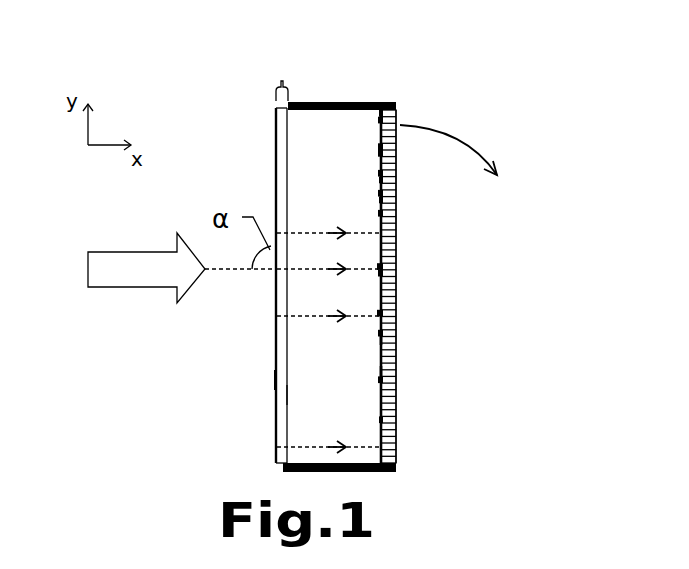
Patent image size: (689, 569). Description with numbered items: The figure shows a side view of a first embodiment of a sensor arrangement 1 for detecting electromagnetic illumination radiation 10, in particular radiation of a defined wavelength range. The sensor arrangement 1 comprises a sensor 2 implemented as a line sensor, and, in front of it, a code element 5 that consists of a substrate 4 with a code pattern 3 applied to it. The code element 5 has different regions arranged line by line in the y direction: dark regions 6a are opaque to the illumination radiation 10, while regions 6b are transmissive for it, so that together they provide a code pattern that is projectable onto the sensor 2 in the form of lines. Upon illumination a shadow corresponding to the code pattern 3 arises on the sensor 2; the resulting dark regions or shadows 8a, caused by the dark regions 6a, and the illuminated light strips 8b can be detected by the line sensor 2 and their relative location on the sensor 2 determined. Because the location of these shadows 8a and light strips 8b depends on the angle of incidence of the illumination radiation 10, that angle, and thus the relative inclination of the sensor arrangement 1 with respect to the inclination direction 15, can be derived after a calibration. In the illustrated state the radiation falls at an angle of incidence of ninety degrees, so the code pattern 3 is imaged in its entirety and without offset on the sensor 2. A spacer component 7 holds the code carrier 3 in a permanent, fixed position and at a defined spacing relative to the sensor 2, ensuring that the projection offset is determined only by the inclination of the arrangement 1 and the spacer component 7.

The sensor arrangement 1 is at (373, 253).
The sensor 2 is at (418, 286).
The code pattern 3 is at (272, 140).
The substrate 4 is at (247, 285).
The code element 5 is at (282, 74).
The dark regions 6a is at (242, 370).
The transmissive regions 6b is at (247, 405).
The spacer component 7 is at (371, 279).
The shadows 8a is at (427, 368).
The light strips 8b is at (428, 324).
The illumination radiation 10 is at (217, 339).
The inclination direction 15 is at (473, 145).